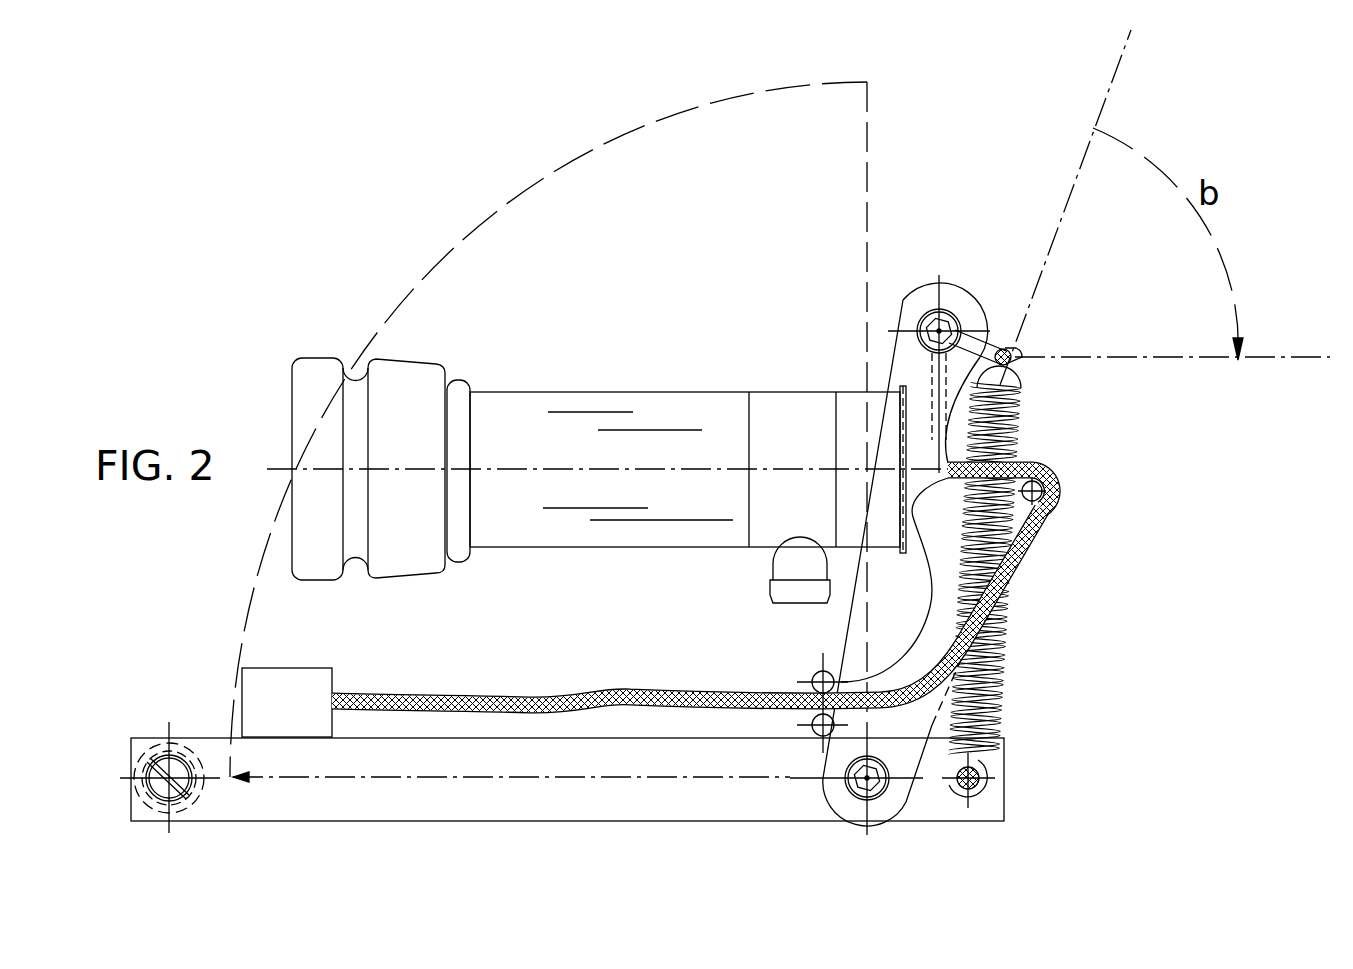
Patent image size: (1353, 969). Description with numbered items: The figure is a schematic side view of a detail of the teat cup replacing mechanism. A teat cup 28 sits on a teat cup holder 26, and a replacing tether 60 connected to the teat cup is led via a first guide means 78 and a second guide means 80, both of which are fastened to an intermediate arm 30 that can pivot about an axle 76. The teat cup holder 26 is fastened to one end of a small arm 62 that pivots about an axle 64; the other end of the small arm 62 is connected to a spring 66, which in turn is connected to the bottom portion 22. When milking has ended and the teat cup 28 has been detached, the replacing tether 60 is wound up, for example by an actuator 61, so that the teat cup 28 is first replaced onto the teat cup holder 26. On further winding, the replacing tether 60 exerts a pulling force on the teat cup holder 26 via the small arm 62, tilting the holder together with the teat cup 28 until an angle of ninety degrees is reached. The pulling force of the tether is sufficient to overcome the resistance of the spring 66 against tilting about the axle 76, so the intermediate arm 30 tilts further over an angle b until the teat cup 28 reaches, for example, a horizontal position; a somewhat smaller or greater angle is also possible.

The bottom portion 22 is at (451, 801).
The teat cup holder 26 is at (913, 442).
The teat cup 28 is at (518, 410).
The intermediate arm 30 is at (953, 532).
The replacing tether 60 is at (597, 693).
The actuator 61 is at (322, 668).
The small arm 62 is at (988, 352).
The axle 64 is at (967, 307).
The spring 66 is at (1017, 418).
The axle 76 is at (867, 778).
The first guide means 78 is at (1053, 503).
The second guide means 80 is at (823, 725).